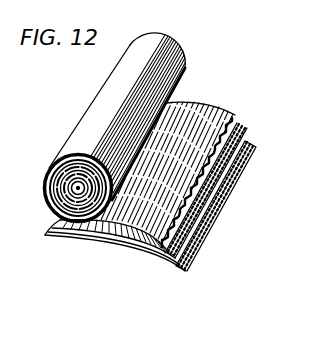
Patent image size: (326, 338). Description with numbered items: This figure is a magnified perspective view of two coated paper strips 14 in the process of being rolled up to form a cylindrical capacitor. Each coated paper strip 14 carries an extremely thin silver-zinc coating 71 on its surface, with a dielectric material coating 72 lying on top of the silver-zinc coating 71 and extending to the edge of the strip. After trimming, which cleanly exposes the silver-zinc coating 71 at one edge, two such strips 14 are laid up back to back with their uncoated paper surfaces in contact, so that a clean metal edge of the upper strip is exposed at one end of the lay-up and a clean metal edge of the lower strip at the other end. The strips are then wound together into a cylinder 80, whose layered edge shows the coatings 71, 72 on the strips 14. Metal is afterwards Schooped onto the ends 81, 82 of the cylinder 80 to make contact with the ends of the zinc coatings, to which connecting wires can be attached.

The cylinder 80 is at (125, 124).
The end of cylinder 81 is at (56, 219).
The end of cylinder 82 is at (171, 40).
The silver-zinc coating 71 is at (237, 118).
The dielectric material coating 72 is at (220, 133).
The coated paper strip 14 is at (240, 123).